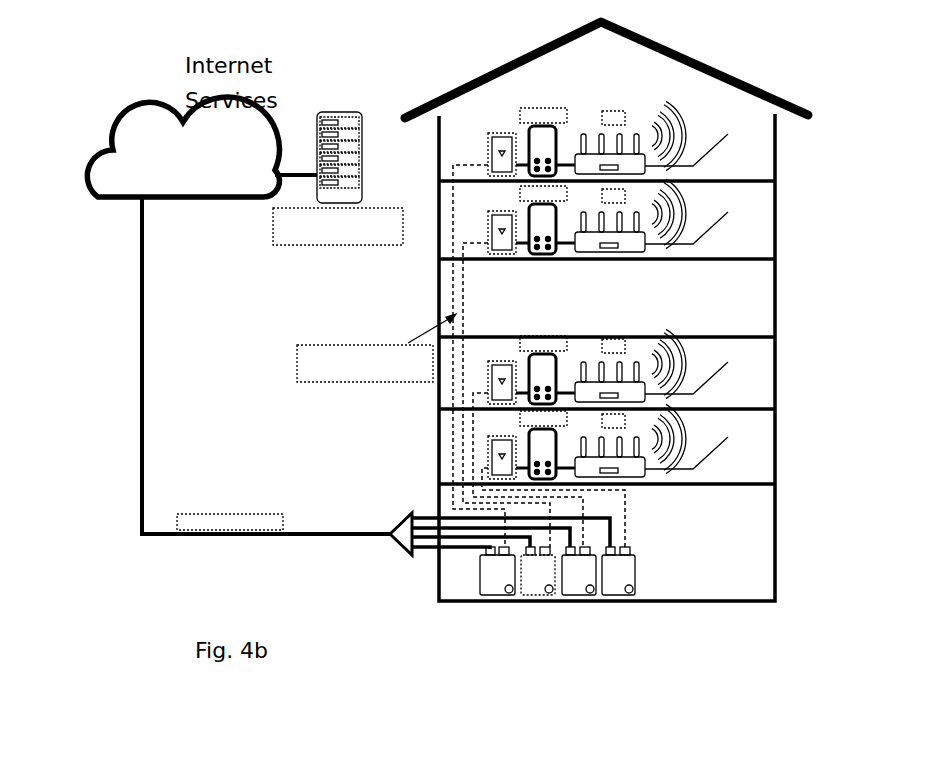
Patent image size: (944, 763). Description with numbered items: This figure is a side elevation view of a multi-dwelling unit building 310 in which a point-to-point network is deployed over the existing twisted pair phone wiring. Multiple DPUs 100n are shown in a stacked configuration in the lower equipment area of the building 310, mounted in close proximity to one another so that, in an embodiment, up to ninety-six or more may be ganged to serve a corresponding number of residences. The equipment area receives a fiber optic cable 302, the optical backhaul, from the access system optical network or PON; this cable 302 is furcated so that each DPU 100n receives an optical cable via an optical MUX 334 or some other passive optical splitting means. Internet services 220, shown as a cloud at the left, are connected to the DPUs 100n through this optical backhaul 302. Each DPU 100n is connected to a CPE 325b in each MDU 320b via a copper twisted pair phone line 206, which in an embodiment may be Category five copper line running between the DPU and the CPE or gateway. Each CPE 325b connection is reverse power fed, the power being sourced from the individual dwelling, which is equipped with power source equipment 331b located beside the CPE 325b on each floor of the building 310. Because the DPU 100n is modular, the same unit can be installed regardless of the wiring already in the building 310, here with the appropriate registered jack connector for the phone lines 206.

The Internet services 220 is at (110, 155).
The fiber optic cable bundle 302 is at (289, 537).
The optical MUX 334 is at (385, 512).
The building 310 is at (792, 202).
The MDU 320b is at (753, 158).
The copper twisted pair phone line 206 is at (463, 444).
The power source equipment (PSE) 331b is at (548, 137).
The CPE 325b is at (669, 289).
The DPU 100n is at (487, 590).